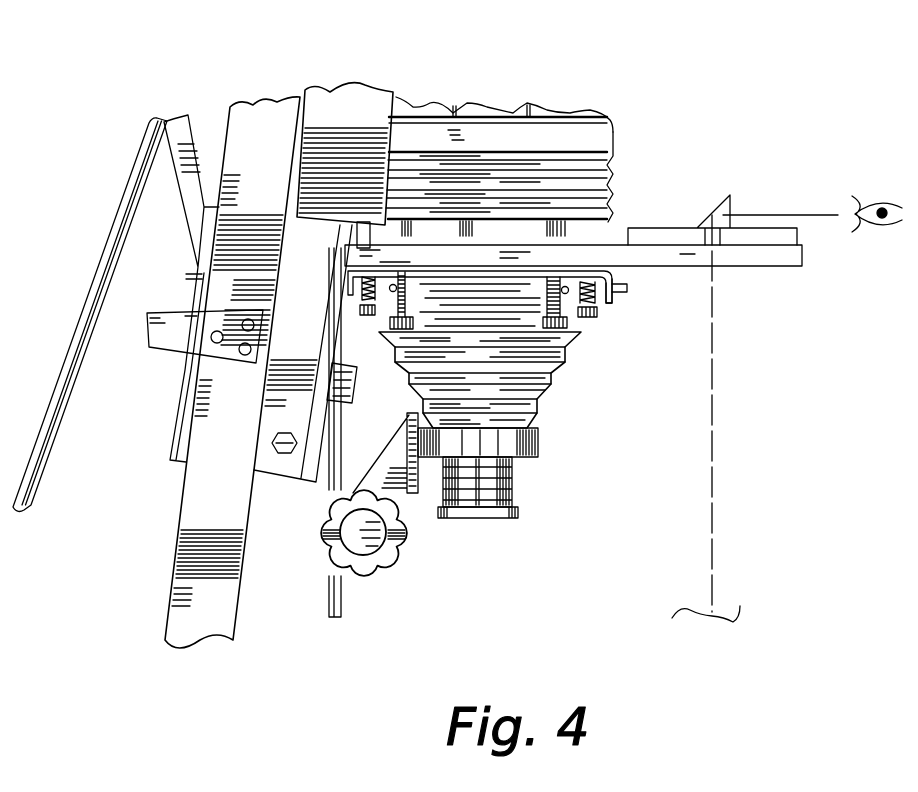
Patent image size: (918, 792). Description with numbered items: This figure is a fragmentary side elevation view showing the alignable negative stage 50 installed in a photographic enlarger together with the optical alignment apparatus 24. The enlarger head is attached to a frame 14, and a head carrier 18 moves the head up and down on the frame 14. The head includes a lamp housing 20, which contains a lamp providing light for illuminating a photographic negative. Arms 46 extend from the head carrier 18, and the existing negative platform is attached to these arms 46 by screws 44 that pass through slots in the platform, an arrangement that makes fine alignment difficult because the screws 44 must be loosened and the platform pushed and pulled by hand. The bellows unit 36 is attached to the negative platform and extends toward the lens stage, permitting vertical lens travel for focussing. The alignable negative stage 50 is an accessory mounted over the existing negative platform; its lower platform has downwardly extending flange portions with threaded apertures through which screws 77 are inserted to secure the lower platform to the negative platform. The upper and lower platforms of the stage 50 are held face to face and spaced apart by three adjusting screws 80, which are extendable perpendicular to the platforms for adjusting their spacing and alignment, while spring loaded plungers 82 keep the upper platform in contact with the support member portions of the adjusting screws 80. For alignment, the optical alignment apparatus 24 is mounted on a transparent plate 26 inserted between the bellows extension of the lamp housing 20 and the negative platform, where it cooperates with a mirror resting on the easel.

The frame 14 is at (210, 613).
The head carrier 18 is at (288, 408).
The lamp housing 20 is at (537, 110).
The optical alignment apparatus 24 is at (741, 200).
The transparent plate 26 is at (763, 258).
The bellows unit 36 is at (546, 395).
The screws 44 is at (394, 292).
The arms 46 is at (517, 290).
The alignable negative stage 50 is at (657, 283).
The screws 77 is at (629, 288).
The adjusting screws 80 is at (413, 330).
The spring loaded plungers 82 is at (598, 312).